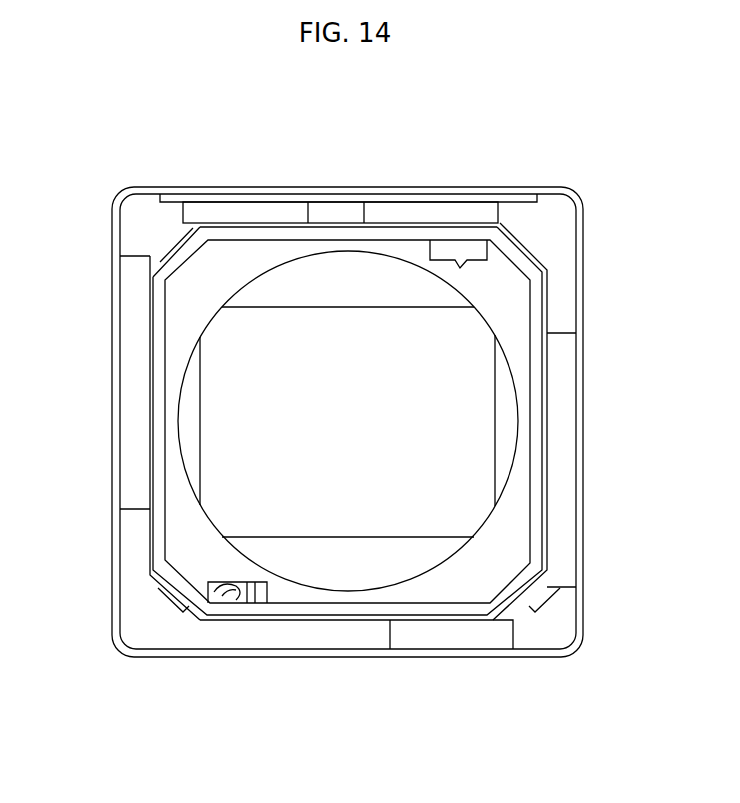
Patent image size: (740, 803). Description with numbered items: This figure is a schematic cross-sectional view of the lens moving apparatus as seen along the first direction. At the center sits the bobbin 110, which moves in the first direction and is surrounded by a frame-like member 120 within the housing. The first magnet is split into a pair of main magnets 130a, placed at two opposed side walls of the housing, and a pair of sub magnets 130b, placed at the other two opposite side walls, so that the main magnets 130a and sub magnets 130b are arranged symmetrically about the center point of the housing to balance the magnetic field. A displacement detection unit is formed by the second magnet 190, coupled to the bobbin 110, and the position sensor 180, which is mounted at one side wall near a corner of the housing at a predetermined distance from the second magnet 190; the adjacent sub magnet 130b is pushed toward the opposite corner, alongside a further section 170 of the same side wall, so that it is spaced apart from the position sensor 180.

The bobbin 110 is at (503, 322).
The frame 120 is at (543, 291).
The main magnets 130a is at (135, 403).
The sub magnets 130b is at (238, 212).
The top box 170 is at (338, 200).
The position sensor 180 is at (417, 215).
The second magnet 190 is at (470, 250).